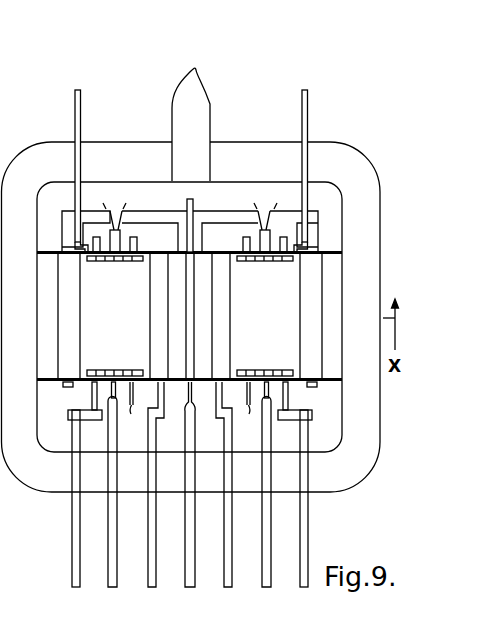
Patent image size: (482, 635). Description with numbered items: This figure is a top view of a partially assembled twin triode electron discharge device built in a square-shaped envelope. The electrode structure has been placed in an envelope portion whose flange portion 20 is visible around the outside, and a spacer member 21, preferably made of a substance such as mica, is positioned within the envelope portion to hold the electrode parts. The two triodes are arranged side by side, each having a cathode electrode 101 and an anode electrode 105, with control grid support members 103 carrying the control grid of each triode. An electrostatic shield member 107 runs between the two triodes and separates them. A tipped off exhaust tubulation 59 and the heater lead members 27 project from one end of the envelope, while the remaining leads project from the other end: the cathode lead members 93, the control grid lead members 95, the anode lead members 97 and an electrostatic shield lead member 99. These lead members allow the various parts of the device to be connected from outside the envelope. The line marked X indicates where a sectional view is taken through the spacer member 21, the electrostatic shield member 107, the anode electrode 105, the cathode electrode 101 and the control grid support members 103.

The flange portion 20 is at (373, 456).
The spacer member 21 is at (331, 378).
The heater lead member 27 is at (83, 91).
The tipped off exhaust tubulation 59 is at (200, 93).
The cathode lead member 93 is at (117, 580).
The control grid lead member 95 is at (80, 580).
The anode lead member 97 is at (156, 580).
The electrostatic shield lead member 99 is at (195, 580).
The cathode electrode 101 is at (121, 237).
The control grid support member 103 is at (140, 246).
The anode electrode 105 is at (83, 337).
The electrostatic shield member 107 is at (194, 204).